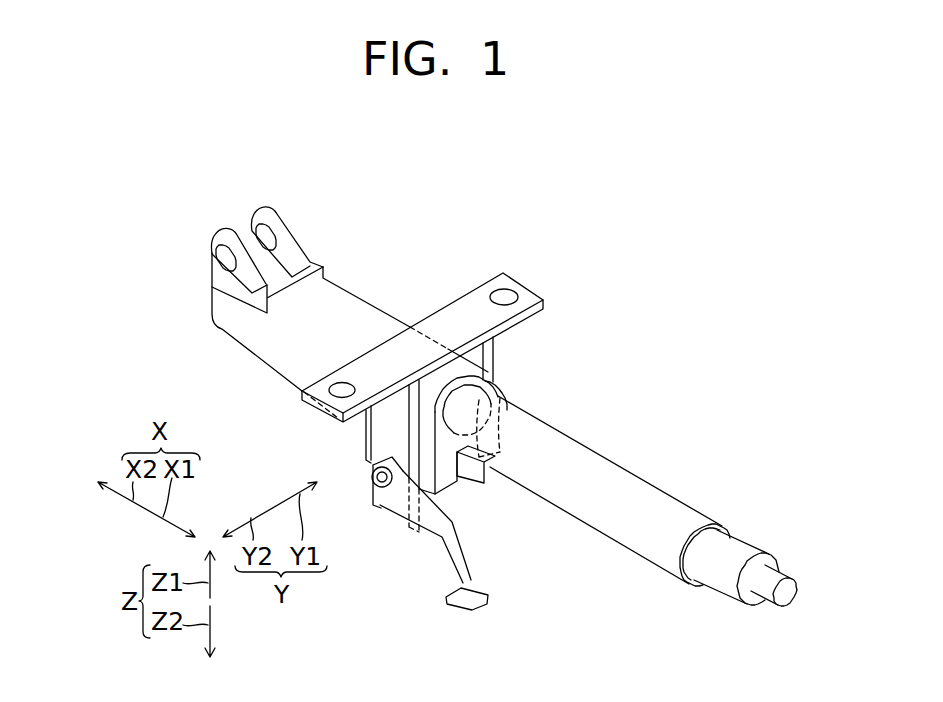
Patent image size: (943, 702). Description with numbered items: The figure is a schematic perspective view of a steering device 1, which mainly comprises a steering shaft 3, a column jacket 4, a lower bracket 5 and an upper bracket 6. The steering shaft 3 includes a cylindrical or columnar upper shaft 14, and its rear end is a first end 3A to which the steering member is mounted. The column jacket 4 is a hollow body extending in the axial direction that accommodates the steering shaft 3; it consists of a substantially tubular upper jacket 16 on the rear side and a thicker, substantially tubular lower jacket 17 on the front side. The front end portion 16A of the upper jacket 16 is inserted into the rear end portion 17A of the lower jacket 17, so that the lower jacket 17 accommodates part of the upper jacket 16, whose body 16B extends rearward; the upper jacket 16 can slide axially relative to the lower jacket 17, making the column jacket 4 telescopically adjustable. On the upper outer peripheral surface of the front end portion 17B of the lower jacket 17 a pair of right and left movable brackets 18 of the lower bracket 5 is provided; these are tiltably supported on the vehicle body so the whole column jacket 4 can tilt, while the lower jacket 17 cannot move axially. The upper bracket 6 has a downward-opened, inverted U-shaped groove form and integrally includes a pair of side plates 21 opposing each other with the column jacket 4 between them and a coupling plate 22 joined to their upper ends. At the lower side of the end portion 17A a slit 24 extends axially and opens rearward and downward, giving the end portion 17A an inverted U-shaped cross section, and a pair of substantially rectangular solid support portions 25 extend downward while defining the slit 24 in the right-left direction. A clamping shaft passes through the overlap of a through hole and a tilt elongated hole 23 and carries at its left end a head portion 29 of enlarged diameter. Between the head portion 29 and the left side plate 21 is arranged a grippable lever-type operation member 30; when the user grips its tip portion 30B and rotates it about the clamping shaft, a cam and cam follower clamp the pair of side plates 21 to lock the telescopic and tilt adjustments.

The steering device 1 is at (452, 669).
The steering shaft 3 is at (729, 533).
The first end 3A is at (780, 583).
The column jacket 4 is at (661, 477).
The lower bracket 5 is at (265, 230).
The upper bracket 6 is at (522, 274).
The upper shaft 14 is at (747, 557).
The upper jacket 16 is at (610, 473).
The end portion 16A is at (478, 382).
The tube body portion 16B is at (572, 505).
The lower jacket 17 is at (270, 347).
The end portion 17A is at (480, 363).
The end portion 17B is at (212, 309).
The movable bracket 18 is at (226, 232).
The side plate 21 is at (364, 437).
The coupling plate 22 is at (528, 298).
The tilt elongated hole 23 is at (402, 510).
The slit 24 is at (460, 478).
The support portion 25 is at (523, 428).
The head portion 29 is at (375, 508).
The operation member 30 is at (527, 589).
The tip portion 30B is at (488, 592).